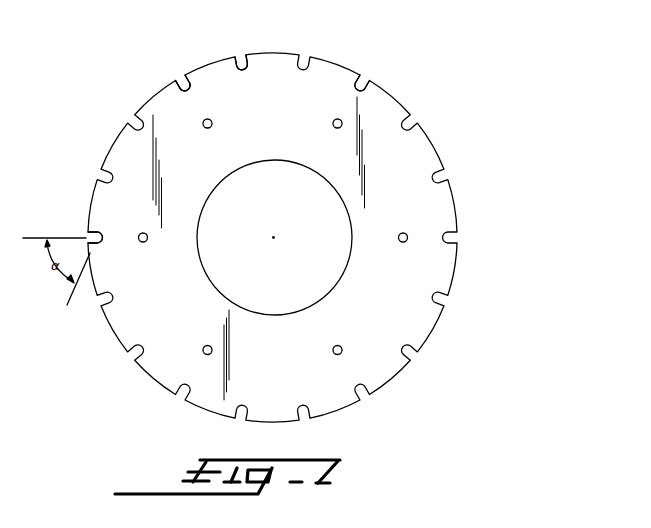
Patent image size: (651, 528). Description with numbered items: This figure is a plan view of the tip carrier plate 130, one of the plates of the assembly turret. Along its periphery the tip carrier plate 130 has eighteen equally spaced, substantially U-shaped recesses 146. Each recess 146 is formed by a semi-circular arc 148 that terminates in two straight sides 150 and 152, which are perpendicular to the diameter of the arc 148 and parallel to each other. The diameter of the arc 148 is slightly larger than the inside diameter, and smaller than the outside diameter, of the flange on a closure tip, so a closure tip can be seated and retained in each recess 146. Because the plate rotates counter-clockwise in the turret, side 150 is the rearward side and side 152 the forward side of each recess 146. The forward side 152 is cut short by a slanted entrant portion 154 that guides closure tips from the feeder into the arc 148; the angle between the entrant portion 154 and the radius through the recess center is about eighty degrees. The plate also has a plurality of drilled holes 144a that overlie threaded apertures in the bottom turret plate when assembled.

The tip carrier plate 130 is at (443, 136).
The drilled holes 144a is at (332, 124).
The U-shaped recess 146 is at (366, 74).
The semi-circular arc 148 is at (240, 66).
The straight side 150 is at (244, 53).
The straight side 152 is at (174, 88).
The slanted entrant portion 154 is at (180, 76).